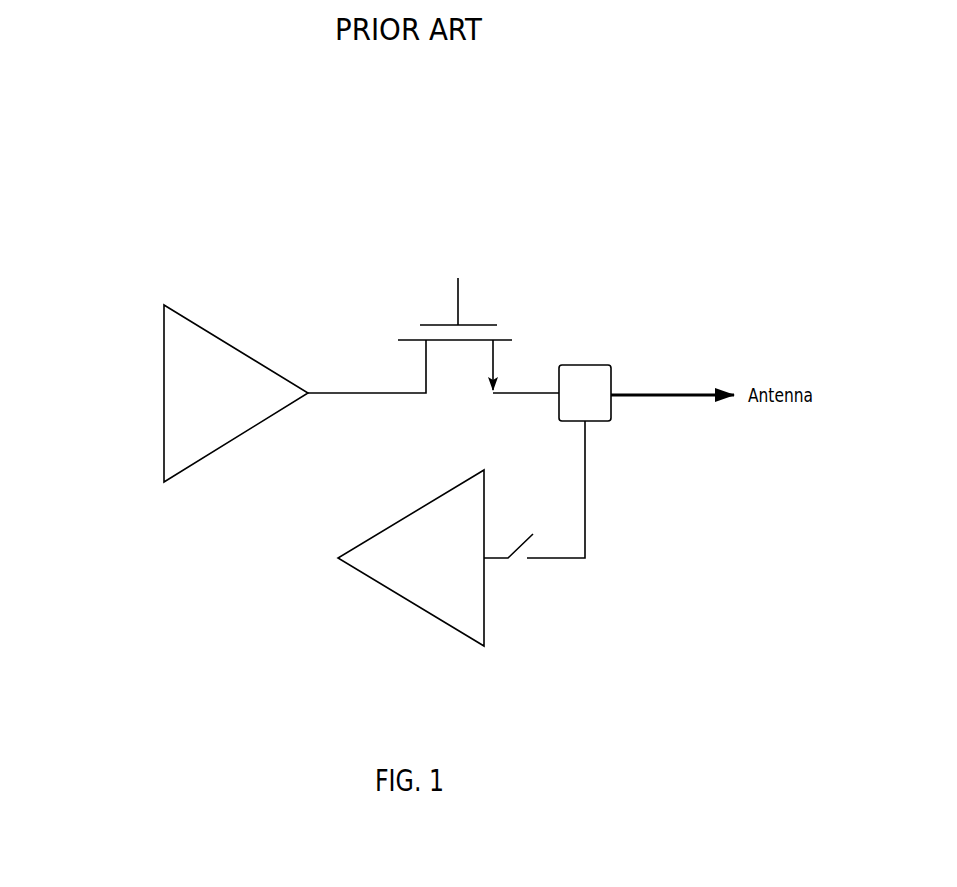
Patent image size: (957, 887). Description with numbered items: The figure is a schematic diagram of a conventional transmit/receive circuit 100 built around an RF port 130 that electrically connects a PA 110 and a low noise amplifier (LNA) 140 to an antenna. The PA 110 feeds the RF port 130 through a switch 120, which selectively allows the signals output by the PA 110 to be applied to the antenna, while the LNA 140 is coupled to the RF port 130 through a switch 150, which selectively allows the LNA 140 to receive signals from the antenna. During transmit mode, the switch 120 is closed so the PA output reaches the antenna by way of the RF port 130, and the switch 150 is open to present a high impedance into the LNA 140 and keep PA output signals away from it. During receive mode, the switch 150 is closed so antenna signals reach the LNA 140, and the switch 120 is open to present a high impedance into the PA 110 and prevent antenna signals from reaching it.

The transmit/receive circuit 100 is at (110, 150).
The PA 110 is at (134, 289).
The switch 120 is at (489, 251).
The RF port 130 is at (614, 350).
The low noise amplifier (LNA) 140 is at (409, 627).
The switch 150 is at (546, 580).